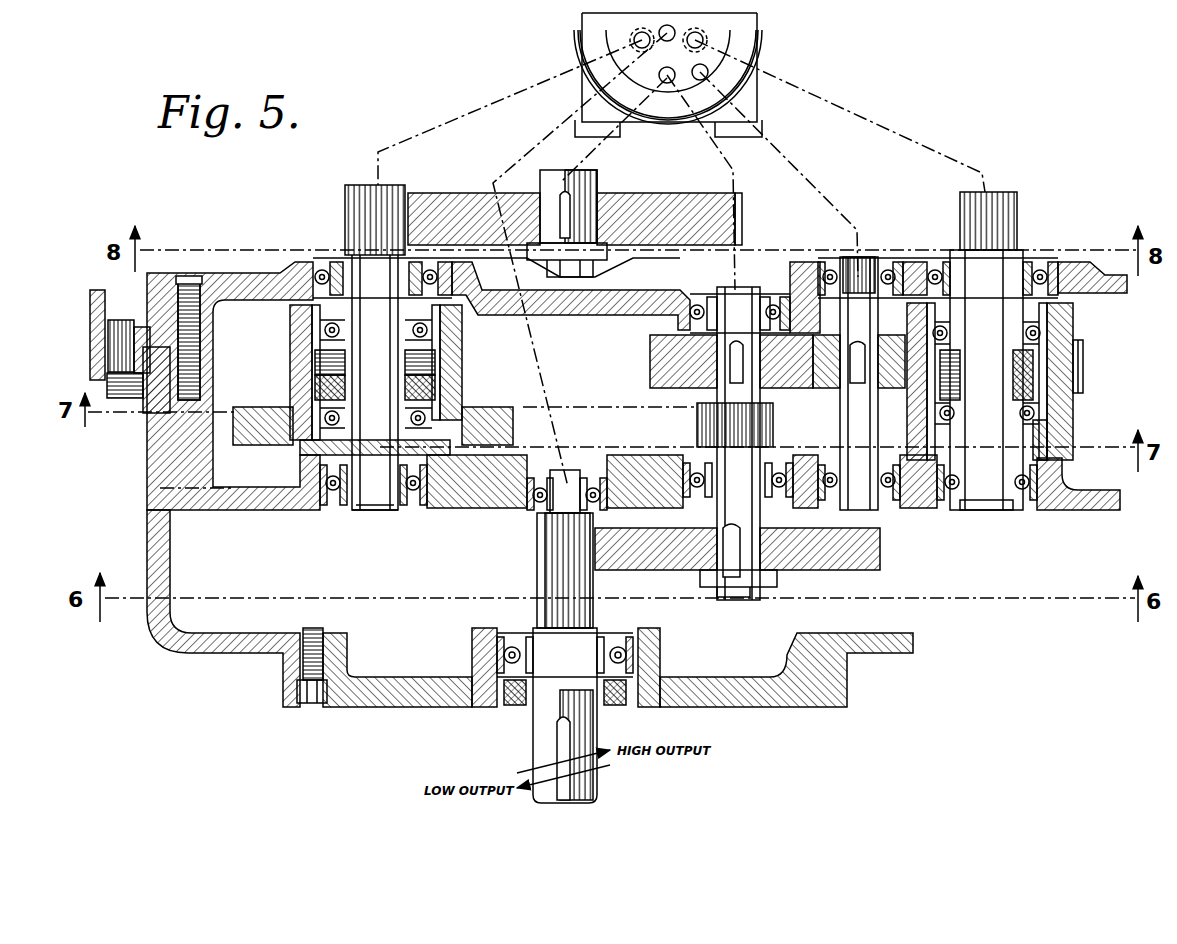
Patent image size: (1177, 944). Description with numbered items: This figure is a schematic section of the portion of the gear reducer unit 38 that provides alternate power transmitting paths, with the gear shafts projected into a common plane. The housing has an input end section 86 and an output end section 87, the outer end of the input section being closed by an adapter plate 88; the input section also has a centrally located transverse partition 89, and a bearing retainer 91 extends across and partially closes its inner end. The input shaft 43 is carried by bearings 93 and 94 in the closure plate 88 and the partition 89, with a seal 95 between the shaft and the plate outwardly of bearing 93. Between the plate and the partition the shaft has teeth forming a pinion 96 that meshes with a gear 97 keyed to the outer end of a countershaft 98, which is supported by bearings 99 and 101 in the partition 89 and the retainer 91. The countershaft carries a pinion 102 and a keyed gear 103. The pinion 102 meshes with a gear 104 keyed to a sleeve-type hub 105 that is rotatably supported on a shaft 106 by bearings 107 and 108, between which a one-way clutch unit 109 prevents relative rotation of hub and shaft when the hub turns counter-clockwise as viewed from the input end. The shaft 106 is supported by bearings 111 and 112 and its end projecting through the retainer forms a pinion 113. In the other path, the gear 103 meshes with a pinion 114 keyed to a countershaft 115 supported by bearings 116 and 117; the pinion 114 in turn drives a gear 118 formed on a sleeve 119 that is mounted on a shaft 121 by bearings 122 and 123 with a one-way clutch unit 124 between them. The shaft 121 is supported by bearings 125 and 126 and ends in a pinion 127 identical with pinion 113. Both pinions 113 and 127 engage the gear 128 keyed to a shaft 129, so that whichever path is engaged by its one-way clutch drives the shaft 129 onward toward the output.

The gear reducer unit 38 is at (146, 470).
The input shaft 43 is at (535, 731).
The input end section 86 is at (150, 527).
The output end section 87 is at (90, 300).
The adapter plate 88 is at (757, 690).
The partition 89 is at (478, 508).
The bearing retainer 91 is at (572, 305).
The bearing 93 is at (645, 662).
The bearing 94 is at (530, 510).
The seal 95 is at (612, 706).
The pinion 96 is at (545, 574).
The gear 97 is at (852, 570).
The countershaft 98 is at (712, 512).
The bearing 99 is at (798, 503).
The bearing 101 is at (694, 295).
The pinion 102 is at (774, 427).
The gear 103 is at (660, 366).
The gear 104 is at (482, 407).
The sleeve-type hub 105 is at (462, 365).
The shaft 106 is at (372, 506).
The bearing 107 is at (300, 330).
The bearing 108 is at (318, 392).
The one-way clutch unit 109 is at (318, 362).
The bearing 111 is at (416, 505).
The bearing 112 is at (312, 262).
The pinion 113 is at (345, 205).
The pinion 114 is at (770, 398).
The countershaft 115 is at (872, 500).
The bearing 116 is at (903, 493).
The bearing 117 is at (895, 262).
The gear 118 is at (1083, 376).
The sleeve 119 is at (1070, 432).
The shaft 121 is at (988, 512).
The bearing 122 is at (1073, 403).
The bearing 123 is at (1073, 322).
The one-way clutch unit 124 is at (1083, 360).
The bearing 125 is at (1050, 504).
The bearing 126 is at (1046, 264).
The pinion 127 is at (1017, 214).
The gear 128 is at (626, 196).
The shaft 129 is at (548, 196).